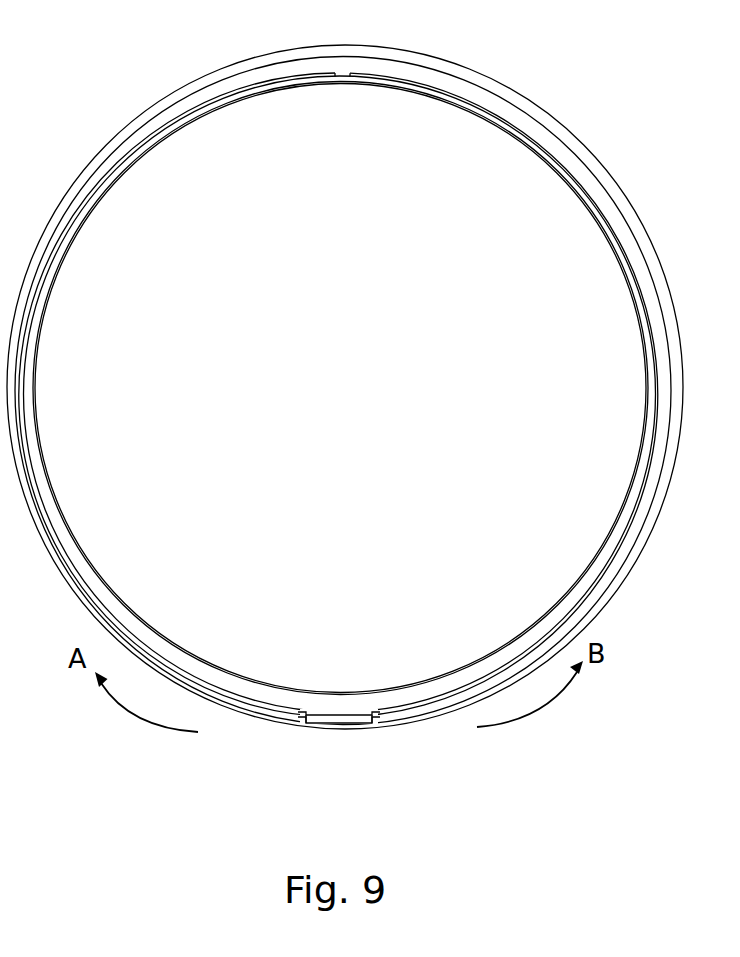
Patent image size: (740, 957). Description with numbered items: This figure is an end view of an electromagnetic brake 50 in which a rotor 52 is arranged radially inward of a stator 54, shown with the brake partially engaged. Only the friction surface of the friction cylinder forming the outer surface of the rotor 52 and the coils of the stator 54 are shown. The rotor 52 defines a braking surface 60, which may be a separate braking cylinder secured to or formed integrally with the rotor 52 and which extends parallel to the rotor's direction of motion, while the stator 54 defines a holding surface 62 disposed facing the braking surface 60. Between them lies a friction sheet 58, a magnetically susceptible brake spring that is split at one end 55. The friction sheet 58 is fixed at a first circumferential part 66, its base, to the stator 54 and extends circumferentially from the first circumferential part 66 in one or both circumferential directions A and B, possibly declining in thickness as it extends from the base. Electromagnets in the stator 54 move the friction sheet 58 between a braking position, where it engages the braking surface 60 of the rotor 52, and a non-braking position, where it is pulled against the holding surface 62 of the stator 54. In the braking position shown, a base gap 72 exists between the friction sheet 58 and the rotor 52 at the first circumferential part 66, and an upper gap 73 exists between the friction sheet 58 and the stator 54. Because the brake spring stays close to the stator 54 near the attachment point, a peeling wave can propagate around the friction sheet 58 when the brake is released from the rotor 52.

The electromagnetic brake 50 is at (345, 408).
The rotor 52 is at (641, 328).
The stator 54 is at (642, 229).
The split end 55 is at (343, 74).
The friction sheet 58 is at (645, 462).
The braking surface 60 is at (48, 492).
The holding surface 62 is at (186, 96).
The first circumferential part 66 is at (358, 718).
The base gap 72 is at (322, 705).
The upper gap 73 is at (266, 75).